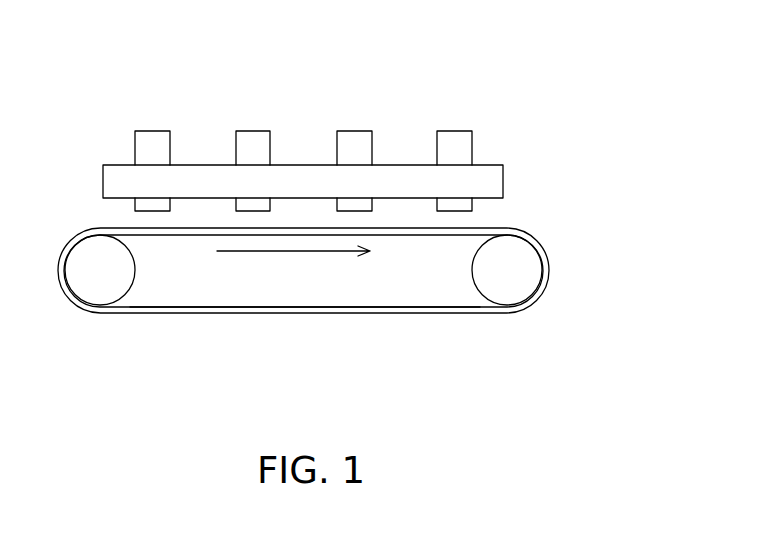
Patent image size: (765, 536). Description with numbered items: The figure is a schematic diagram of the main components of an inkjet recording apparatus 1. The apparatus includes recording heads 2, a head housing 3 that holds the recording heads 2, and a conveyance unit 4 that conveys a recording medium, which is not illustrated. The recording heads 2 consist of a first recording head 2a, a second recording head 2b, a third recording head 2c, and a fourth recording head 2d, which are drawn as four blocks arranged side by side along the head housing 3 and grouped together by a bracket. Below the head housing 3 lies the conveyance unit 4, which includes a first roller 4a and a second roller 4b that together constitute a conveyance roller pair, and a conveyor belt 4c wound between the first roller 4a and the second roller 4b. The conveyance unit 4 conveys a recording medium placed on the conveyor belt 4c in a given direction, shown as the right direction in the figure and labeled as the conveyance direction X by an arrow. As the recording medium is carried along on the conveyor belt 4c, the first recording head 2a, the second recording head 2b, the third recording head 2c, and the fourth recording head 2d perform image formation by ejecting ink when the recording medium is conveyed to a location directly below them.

The inkjet recording apparatus 1 is at (541, 113).
The recording heads 2 is at (484, 72).
The first recording head 2a is at (151, 139).
The second recording head 2b is at (253, 139).
The third recording head 2c is at (353, 139).
The fourth recording head 2d is at (453, 139).
The head housing 3 is at (488, 185).
The conveyance unit 4 is at (578, 276).
The first roller 4a is at (100, 272).
The second roller 4b is at (508, 277).
The conveyor belt 4c is at (357, 307).